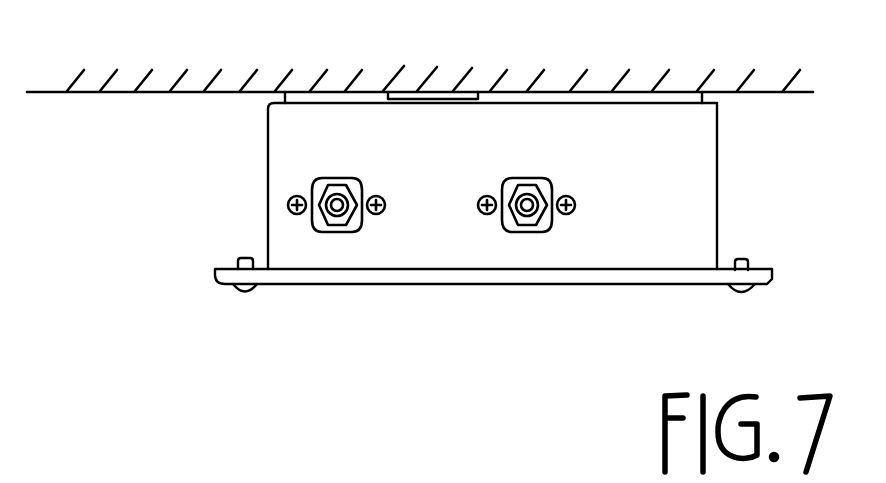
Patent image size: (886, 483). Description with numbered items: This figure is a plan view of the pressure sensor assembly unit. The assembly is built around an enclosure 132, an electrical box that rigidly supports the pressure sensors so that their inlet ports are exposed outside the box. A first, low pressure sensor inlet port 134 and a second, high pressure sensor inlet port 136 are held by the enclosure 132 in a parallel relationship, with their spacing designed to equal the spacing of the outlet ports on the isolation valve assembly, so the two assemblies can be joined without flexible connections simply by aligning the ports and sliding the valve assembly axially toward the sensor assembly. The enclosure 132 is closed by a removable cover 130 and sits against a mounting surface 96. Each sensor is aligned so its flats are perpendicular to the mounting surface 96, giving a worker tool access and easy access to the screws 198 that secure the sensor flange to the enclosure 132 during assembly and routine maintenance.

The mounting surface 96 is at (718, 67).
The removable cover 130 is at (453, 273).
The enclosure 132 is at (669, 249).
The first (low) pressure sensor inlet port 134 is at (339, 193).
The second (high) pressure sensor inlet port 136 is at (535, 190).
The screws 198 is at (573, 202).